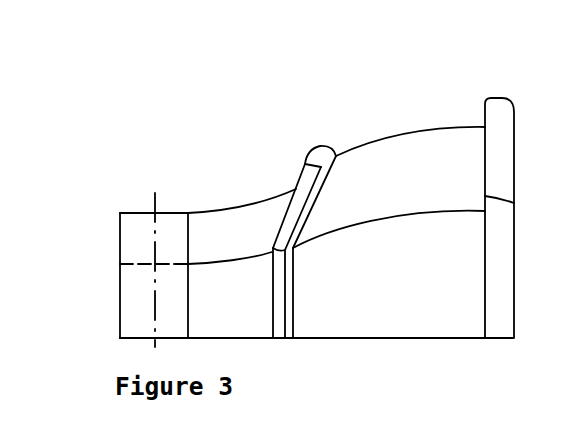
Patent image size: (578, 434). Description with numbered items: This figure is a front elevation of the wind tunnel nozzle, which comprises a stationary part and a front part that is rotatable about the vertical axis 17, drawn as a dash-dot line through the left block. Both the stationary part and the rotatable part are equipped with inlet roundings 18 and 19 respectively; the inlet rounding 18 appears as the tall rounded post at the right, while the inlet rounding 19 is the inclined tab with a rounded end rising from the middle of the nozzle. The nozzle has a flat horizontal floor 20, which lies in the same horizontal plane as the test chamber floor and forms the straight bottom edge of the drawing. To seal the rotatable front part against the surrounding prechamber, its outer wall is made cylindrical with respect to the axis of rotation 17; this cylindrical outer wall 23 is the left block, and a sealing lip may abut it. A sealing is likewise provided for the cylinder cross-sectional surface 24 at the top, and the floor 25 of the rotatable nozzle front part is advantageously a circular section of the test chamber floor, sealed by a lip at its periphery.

The vertical axis 17 is at (155, 252).
The inlet rounding 18 is at (500, 103).
The inlet rounding 19 is at (324, 152).
The flat horizontal floor 20 is at (418, 339).
The cylindrical outer wall 23 is at (133, 317).
The cylinder cross-sectional surface 24 is at (135, 212).
The floor of the rotatable nozzle front part 25 is at (130, 339).